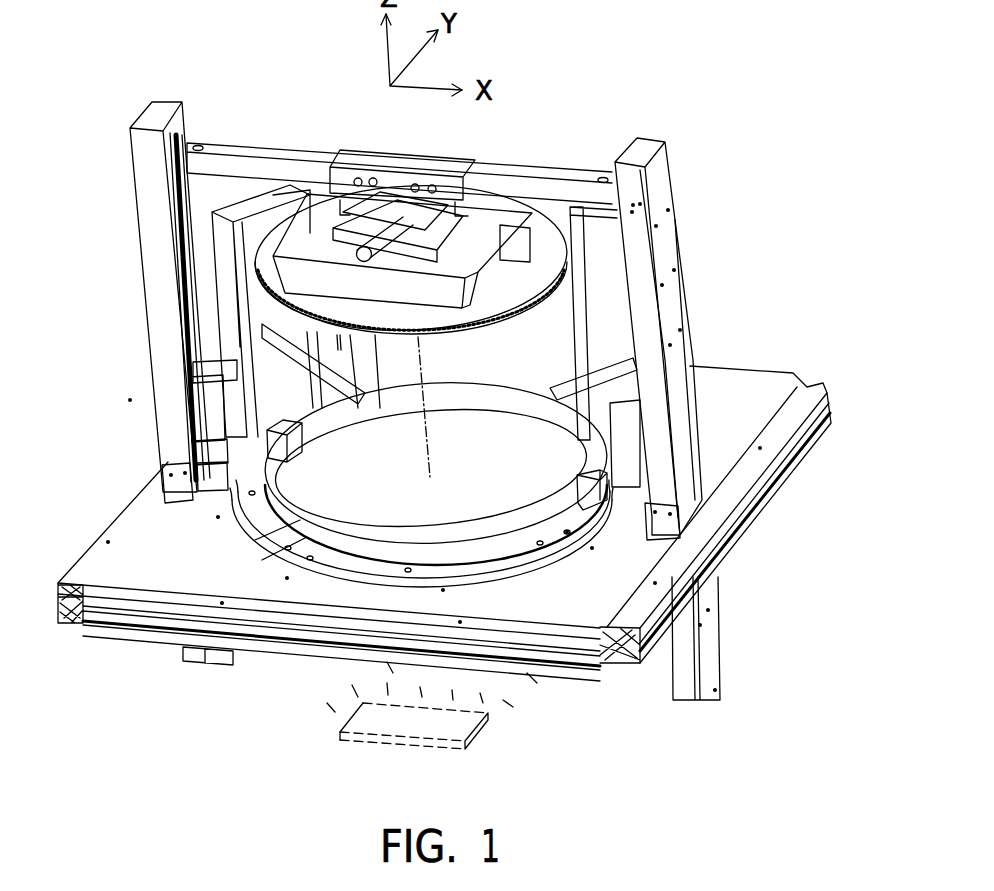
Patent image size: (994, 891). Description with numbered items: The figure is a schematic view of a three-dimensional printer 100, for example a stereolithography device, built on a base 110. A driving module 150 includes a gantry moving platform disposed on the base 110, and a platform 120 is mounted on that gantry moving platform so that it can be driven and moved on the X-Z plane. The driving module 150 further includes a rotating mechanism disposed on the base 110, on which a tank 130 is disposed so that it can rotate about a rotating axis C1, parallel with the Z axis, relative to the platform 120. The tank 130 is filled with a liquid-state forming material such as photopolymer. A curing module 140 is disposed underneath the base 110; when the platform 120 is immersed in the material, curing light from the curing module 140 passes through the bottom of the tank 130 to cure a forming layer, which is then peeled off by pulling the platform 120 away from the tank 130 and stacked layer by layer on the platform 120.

The 3D printer 100 is at (829, 764).
The base 110 is at (745, 549).
The platform 120 is at (548, 240).
The tank 130 is at (335, 540).
The curing module 140 is at (485, 725).
The driving module 150 is at (333, 168).
The rotating axis C1 is at (428, 444).